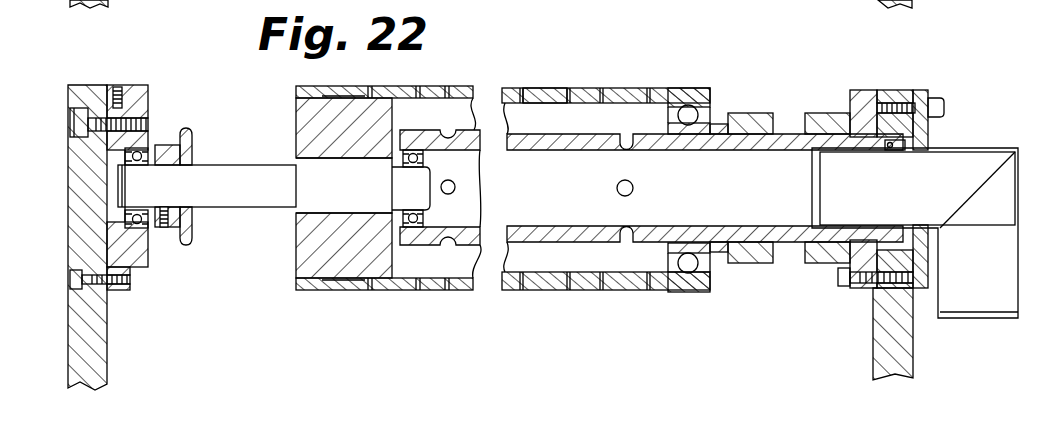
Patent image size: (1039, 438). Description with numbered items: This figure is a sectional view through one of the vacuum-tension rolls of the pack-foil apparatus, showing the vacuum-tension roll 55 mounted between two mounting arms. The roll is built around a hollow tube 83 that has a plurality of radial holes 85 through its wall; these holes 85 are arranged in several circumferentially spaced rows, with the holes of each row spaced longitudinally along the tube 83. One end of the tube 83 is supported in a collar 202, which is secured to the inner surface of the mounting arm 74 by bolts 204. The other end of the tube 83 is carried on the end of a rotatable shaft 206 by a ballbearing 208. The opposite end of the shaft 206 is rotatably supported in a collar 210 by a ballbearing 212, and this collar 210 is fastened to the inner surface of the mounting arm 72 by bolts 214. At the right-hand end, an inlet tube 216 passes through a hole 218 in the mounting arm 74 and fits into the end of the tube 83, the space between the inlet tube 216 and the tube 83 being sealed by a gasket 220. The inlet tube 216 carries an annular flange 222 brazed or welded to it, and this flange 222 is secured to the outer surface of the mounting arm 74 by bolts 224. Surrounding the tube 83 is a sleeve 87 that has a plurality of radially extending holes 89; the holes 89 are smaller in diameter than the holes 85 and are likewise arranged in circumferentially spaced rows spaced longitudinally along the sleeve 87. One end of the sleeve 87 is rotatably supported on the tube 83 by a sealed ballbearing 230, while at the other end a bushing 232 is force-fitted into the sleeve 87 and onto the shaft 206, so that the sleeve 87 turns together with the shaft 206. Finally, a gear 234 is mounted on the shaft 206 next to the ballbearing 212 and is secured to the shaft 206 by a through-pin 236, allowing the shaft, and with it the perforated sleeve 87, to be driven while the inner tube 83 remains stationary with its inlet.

The vacuum-tension roll 55 is at (641, 86).
The mounting arm 72 is at (75, 318).
The mounting arm 74 is at (898, 350).
The hollow tube 83 is at (560, 146).
The radial holes 85 is at (624, 150).
The sleeve 87 is at (510, 87).
The radially extending holes 89 is at (566, 88).
The collar 202 is at (861, 100).
The bolts 204 is at (854, 286).
The rotatable shaft 206 is at (254, 198).
The ballbearing 208 is at (423, 147).
The collar 210 is at (138, 266).
The ballbearing 212 is at (150, 146).
The bolts 214 is at (93, 128).
The inlet tube 216 is at (983, 300).
The hole 218 is at (897, 96).
The gasket 220 is at (906, 142).
The annular flange 222 is at (925, 93).
The bolts 224 is at (946, 107).
The sealed ballbearing 230 is at (694, 92).
The bushing 232 is at (302, 128).
The gear 234 is at (163, 145).
The through-pin 236 is at (167, 228).